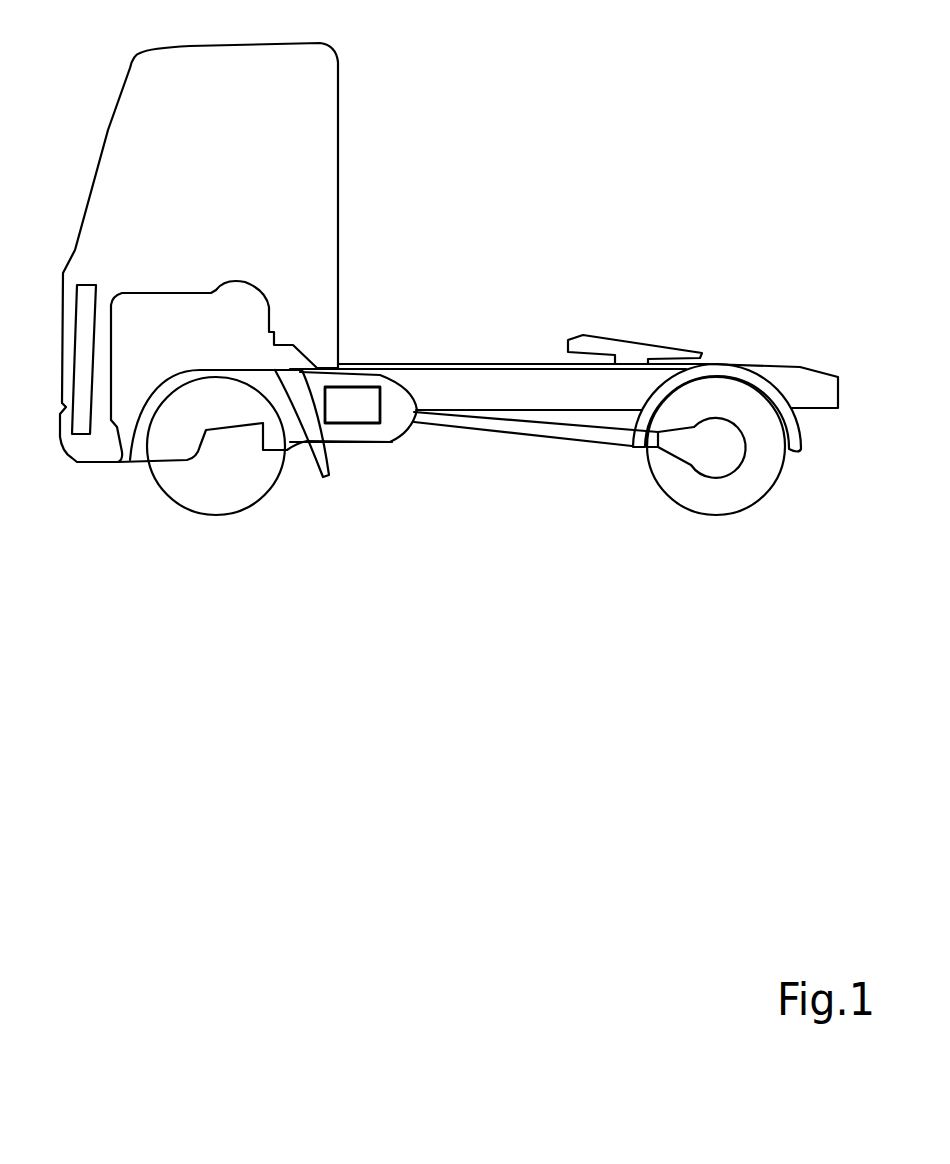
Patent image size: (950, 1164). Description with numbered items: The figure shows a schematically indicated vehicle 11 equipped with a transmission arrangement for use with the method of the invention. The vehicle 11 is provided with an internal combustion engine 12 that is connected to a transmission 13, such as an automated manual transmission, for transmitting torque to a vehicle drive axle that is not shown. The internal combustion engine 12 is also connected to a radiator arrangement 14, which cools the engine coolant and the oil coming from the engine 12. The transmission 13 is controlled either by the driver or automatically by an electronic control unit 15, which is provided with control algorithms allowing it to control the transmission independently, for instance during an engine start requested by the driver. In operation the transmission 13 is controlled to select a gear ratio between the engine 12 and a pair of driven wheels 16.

The vehicle 11 is at (322, 137).
The internal combustion engine 12 is at (167, 291).
The transmission 13 is at (406, 414).
The radiator arrangement 14 is at (82, 422).
The electronic control unit 15 is at (362, 400).
The driven wheels 16 is at (747, 483).